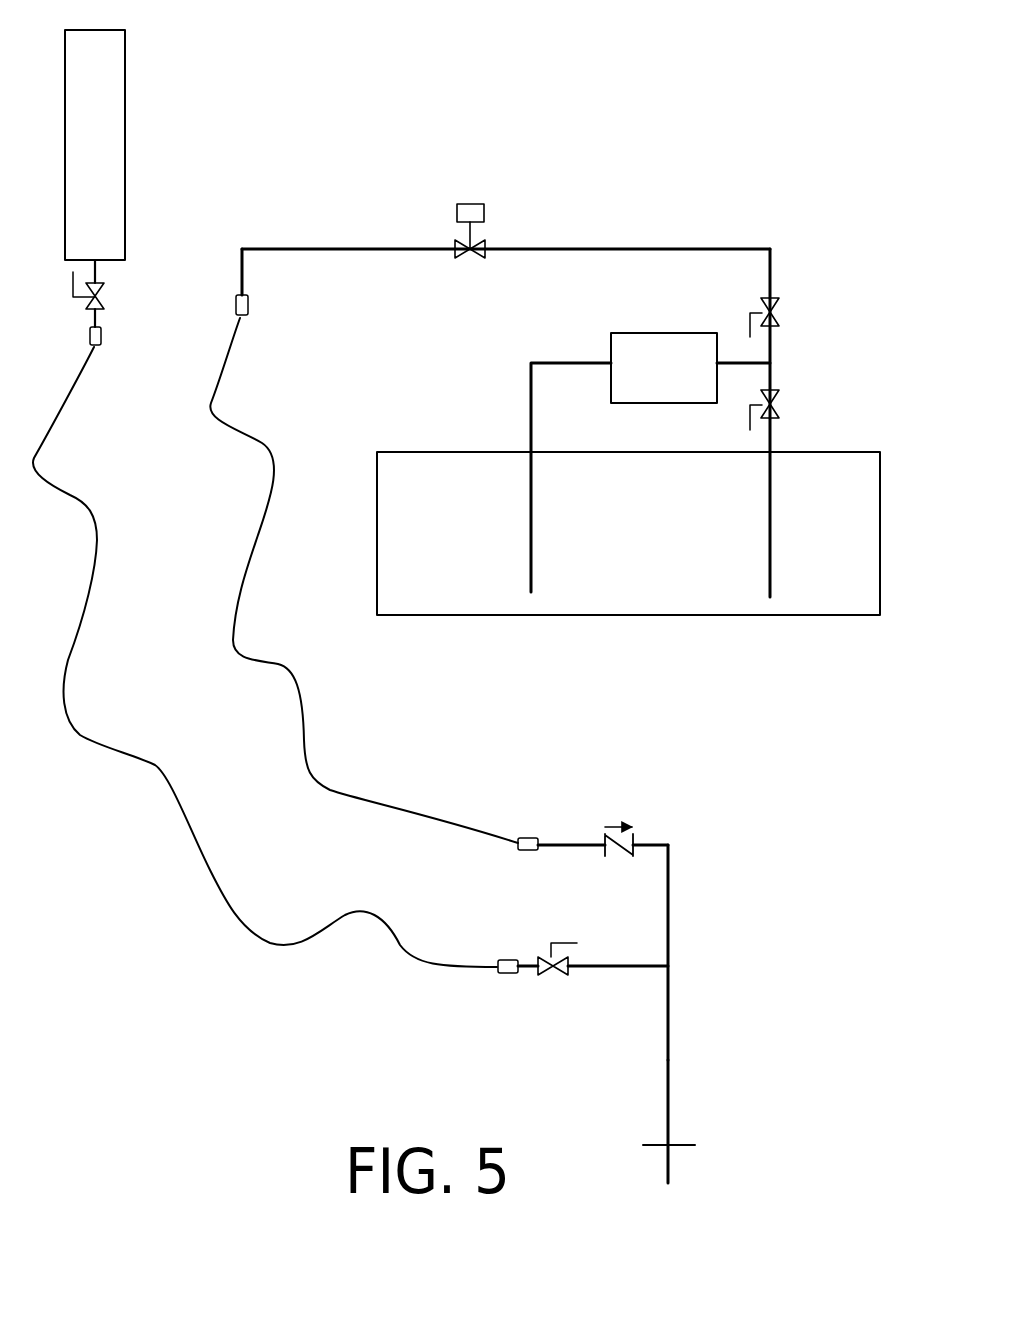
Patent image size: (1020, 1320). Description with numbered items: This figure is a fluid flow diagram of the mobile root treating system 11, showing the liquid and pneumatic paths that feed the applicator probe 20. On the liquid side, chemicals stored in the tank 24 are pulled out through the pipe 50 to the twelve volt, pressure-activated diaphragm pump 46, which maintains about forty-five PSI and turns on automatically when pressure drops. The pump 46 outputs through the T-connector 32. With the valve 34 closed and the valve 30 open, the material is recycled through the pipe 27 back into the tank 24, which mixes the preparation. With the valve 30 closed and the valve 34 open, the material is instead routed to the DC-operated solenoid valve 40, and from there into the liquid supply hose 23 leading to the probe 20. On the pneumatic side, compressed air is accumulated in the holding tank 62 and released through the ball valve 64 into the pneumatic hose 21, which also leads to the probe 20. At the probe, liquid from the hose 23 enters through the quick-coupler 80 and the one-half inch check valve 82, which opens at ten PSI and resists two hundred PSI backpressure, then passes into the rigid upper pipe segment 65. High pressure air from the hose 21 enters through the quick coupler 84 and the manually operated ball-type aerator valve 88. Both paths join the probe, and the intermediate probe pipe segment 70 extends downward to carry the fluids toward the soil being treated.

The mobile root treating system 11 is at (490, 70).
The applicator probe 20 is at (707, 934).
The pneumatic hose 21 is at (225, 902).
The liquid supply hose 23 is at (348, 788).
The tank 24 is at (697, 593).
The pipe 27 is at (773, 545).
The valve 30 is at (780, 410).
The T-connector 32 is at (773, 364).
The valve 34 is at (774, 312).
The DC-operated solenoid valve 40 is at (480, 191).
The diaphragm pump 46 is at (650, 357).
The pipe 50 is at (529, 532).
The holding tank 62 is at (108, 73).
The ball valve 64 is at (99, 304).
The upper pipe segment 65 is at (667, 898).
The intermediate probe pipe segment 70 is at (666, 1062).
The quick-coupler 80 is at (532, 837).
The check valve 82 is at (630, 821).
The quick coupler 84 is at (511, 975).
The aerator valve 88 is at (549, 962).